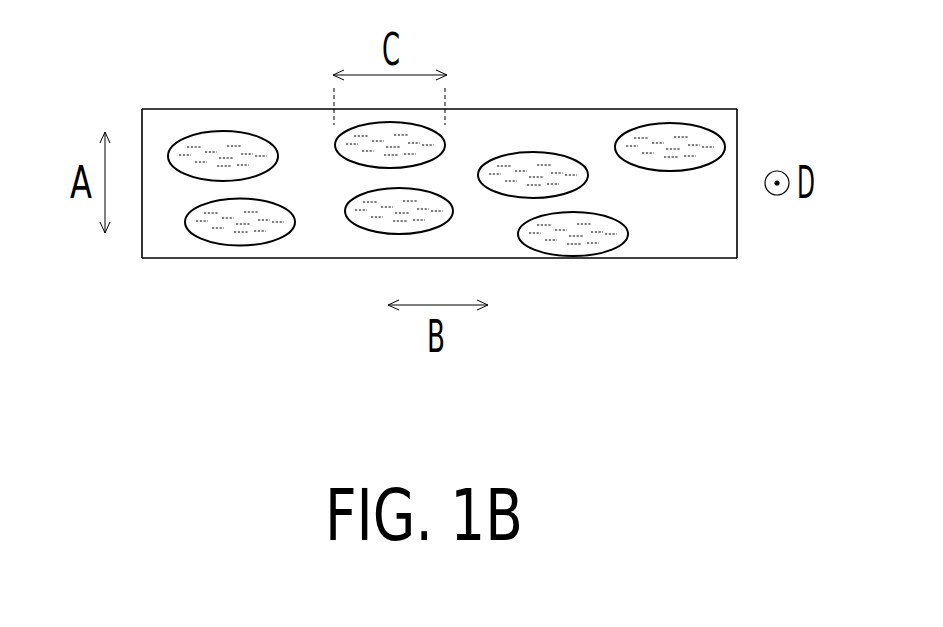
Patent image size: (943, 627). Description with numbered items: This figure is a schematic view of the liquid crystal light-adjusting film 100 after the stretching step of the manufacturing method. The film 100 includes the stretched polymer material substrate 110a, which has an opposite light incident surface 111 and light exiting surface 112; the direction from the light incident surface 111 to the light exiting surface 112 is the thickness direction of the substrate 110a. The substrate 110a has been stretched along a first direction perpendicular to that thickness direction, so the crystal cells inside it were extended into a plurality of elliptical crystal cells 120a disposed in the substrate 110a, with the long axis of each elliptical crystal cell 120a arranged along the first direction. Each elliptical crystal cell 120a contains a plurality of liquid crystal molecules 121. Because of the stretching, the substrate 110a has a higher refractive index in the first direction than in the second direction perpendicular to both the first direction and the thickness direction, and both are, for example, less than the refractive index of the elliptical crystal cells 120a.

The liquid crystal light-adjusting film 100 is at (118, 42).
The polymer material substrate 110a is at (240, 120).
The light incident surface 111 is at (682, 258).
The light exiting surface 112 is at (682, 108).
The elliptical crystal cells 120a is at (535, 152).
The liquid crystal molecules 121 is at (553, 163).